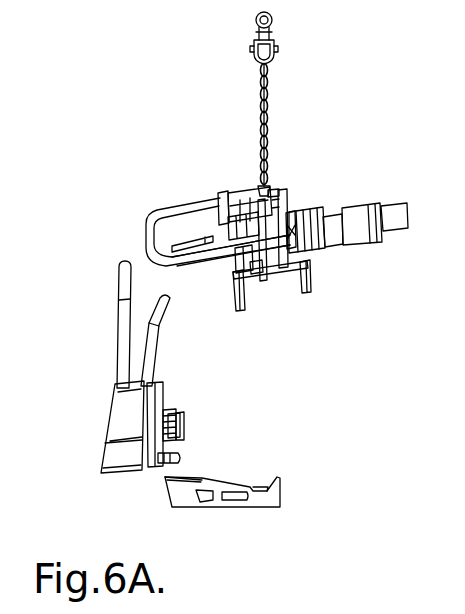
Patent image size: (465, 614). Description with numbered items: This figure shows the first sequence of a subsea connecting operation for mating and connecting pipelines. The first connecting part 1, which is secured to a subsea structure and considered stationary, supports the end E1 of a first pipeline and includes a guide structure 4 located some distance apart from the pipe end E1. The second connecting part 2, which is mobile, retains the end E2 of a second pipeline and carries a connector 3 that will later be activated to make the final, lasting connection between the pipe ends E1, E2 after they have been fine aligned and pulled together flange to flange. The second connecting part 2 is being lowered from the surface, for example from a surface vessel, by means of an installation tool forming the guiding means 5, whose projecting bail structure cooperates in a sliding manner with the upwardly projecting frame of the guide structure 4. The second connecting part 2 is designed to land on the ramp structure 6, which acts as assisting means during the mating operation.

The first connecting part 1 is at (108, 375).
The second connecting part 2 is at (285, 180).
The connector 3 is at (252, 263).
The guide structure 4 is at (114, 256).
The guiding means 5 is at (171, 190).
The ramp structure 6 is at (240, 466).
The end of first pipeline E1 is at (171, 418).
The end of second pipeline E2 is at (326, 222).